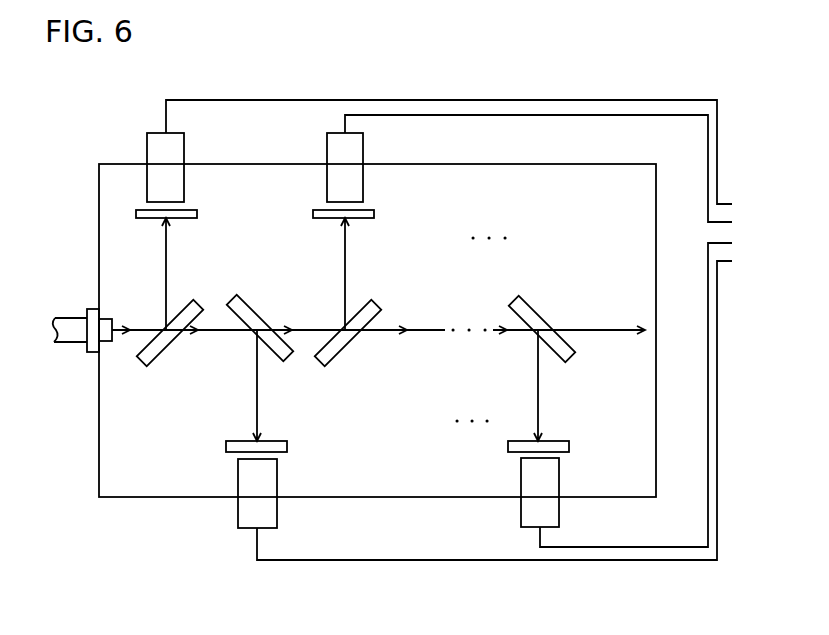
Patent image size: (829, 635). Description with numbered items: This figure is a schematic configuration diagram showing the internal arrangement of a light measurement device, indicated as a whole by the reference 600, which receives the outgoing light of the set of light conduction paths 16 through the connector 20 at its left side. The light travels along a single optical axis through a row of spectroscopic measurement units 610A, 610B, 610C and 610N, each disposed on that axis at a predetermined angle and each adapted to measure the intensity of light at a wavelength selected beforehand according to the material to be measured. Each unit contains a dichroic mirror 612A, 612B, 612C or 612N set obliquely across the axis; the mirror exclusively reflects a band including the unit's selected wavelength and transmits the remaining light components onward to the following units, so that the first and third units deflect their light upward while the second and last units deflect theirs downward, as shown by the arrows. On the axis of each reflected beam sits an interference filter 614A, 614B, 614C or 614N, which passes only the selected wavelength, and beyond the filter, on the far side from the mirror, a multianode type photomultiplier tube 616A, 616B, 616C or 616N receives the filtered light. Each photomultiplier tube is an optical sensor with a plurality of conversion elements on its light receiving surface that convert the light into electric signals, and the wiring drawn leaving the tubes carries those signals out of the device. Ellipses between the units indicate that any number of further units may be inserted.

The set of light conduction paths 16 is at (66, 314).
The connector 20 is at (90, 354).
The optical detection system 600 is at (172, 524).
The spectroscopic measurement unit 610A is at (210, 249).
The spectroscopic measurement unit 610B is at (299, 411).
The spectroscopic measurement unit 610C is at (388, 249).
The spectroscopic measurement unit 610N is at (581, 411).
The dichroic mirror 612A is at (182, 302).
The dichroic mirror 612B is at (268, 357).
The dichroic mirror 612C is at (360, 302).
The dichroic mirror 612N is at (550, 358).
The interference filter 614A is at (180, 219).
The interference filter 614B is at (270, 440).
The interference filter 614C is at (358, 219).
The interference filter 614N is at (552, 440).
The multianode type photomultiplier tube 616A is at (189, 169).
The multianode type photomultiplier tube 616B is at (279, 492).
The multianode type photomultiplier tube 616C is at (363, 176).
The multianode type photomultiplier tube 616N is at (561, 492).